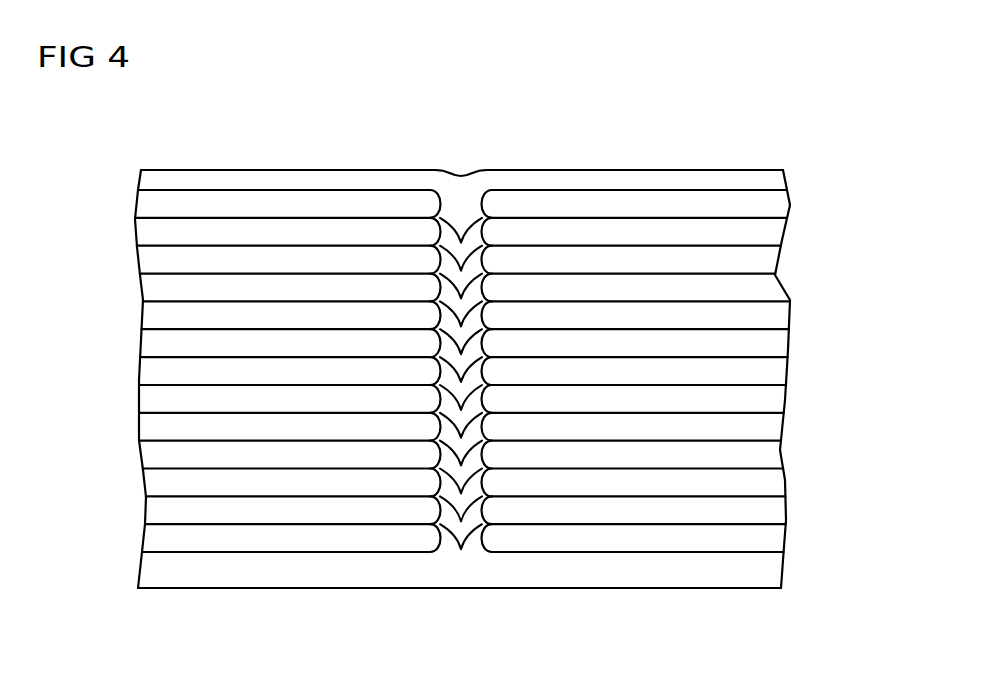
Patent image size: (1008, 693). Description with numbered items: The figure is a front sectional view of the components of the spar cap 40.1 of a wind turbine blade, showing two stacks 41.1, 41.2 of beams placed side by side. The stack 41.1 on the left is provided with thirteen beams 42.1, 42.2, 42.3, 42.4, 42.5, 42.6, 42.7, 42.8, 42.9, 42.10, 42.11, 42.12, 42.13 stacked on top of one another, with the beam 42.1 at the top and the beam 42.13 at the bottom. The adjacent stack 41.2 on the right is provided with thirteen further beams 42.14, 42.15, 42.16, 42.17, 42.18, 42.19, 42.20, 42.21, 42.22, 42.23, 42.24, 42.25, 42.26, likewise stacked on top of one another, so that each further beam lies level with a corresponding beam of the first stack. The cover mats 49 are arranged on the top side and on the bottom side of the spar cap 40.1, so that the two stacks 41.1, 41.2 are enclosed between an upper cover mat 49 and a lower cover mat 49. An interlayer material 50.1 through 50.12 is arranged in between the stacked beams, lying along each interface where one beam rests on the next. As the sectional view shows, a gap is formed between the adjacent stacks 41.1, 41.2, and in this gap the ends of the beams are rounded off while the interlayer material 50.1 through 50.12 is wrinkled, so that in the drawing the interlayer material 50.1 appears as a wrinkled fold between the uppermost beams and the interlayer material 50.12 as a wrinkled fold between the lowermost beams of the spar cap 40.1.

The spar cap 40.1 is at (730, 128).
The stack 41.1 is at (288, 190).
The stack 41.2 is at (638, 190).
The beam 42.1 is at (146, 203).
The beam 42.2 is at (146, 231).
The beam 42.3 is at (146, 259).
The beam 42.4 is at (146, 286).
The beam 42.5 is at (146, 314).
The beam 42.6 is at (146, 342).
The beam 42.7 is at (146, 370).
The beam 42.8 is at (146, 398).
The beam 42.9 is at (146, 426).
The beam 42.10 is at (146, 454).
The beam 42.11 is at (146, 481).
The beam 42.12 is at (146, 509).
The beam 42.13 is at (146, 537).
The further beam 42.14 is at (779, 204).
The further beam 42.15 is at (779, 232).
The further beam 42.16 is at (779, 260).
The further beam 42.17 is at (779, 288).
The further beam 42.18 is at (779, 315).
The further beam 42.19 is at (779, 343).
The further beam 42.20 is at (779, 371).
The further beam 42.21 is at (779, 399).
The further beam 42.22 is at (779, 427).
The further beam 42.23 is at (779, 455).
The further beam 42.24 is at (779, 482).
The further beam 42.25 is at (779, 510).
The further beam 42.26 is at (779, 538).
The cover mat 49 is at (542, 178).
The interlayer material 50.1 is at (462, 241).
The interlayer material 50.12 is at (462, 552).